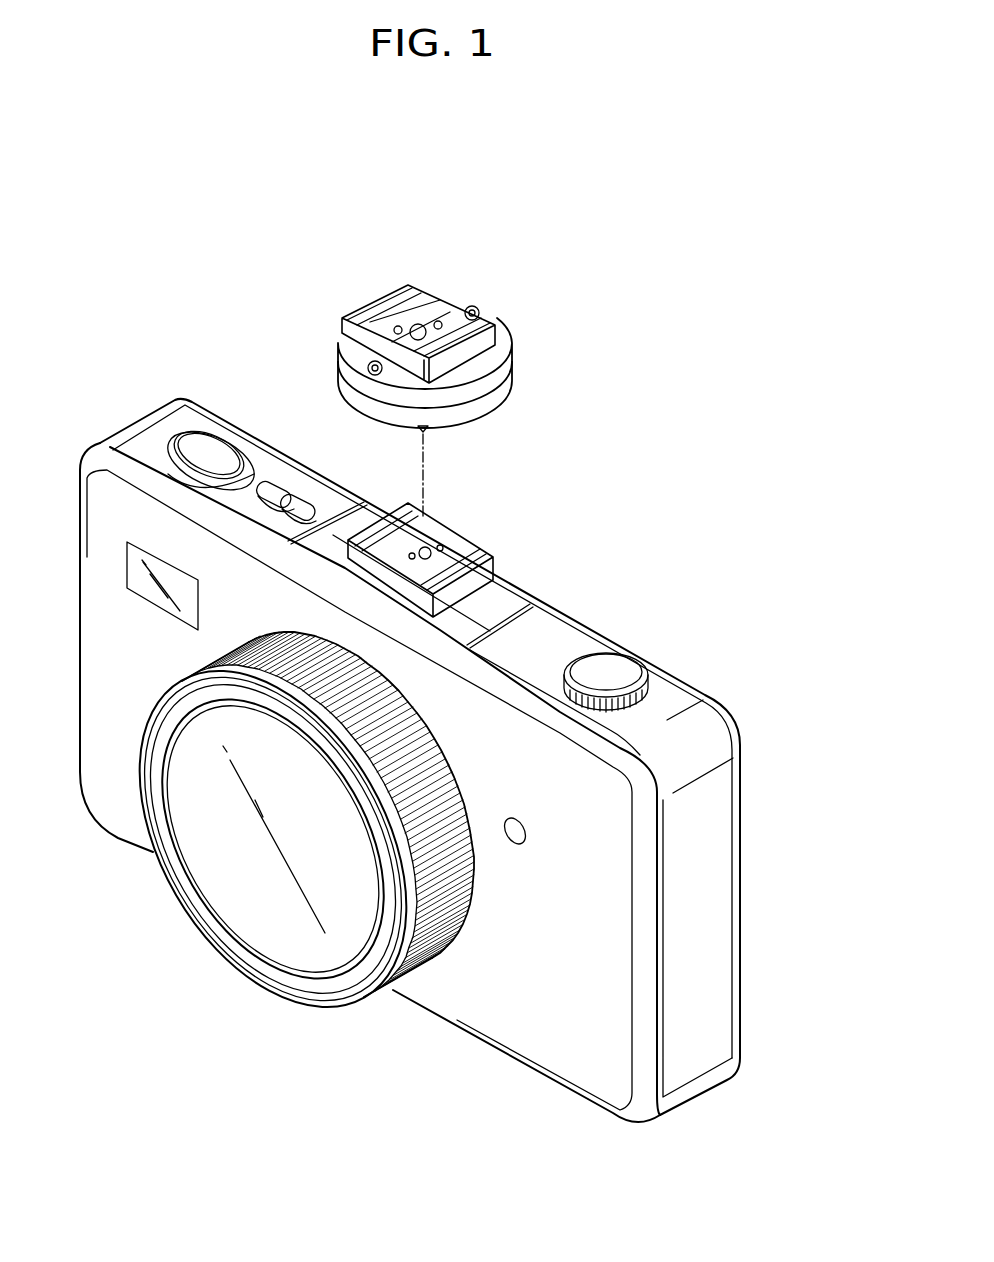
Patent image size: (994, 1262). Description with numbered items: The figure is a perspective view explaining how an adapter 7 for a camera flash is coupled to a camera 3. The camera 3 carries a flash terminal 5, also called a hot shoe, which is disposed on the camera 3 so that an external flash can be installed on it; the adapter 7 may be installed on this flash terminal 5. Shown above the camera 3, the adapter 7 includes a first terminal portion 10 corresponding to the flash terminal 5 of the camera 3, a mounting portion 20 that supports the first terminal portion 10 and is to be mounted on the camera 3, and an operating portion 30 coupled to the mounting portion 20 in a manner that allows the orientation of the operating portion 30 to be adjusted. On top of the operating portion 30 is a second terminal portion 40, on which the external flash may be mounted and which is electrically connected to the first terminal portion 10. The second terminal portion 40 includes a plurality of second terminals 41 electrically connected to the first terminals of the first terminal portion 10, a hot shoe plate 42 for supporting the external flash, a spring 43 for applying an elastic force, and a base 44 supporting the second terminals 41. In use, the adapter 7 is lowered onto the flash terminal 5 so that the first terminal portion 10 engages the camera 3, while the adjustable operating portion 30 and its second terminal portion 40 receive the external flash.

The camera 3 is at (157, 438).
The flash terminal 5 is at (470, 528).
The adapter for a camera flash 7 is at (437, 351).
The first terminal portion 10 is at (484, 412).
The mounting portion 20 is at (524, 381).
The operating portion 30 is at (516, 351).
The second terminal portion 40 is at (452, 283).
The second terminals 41 is at (423, 328).
The hot shoe plate 42 is at (408, 292).
The spring 43 is at (428, 312).
The base 44 is at (482, 302).